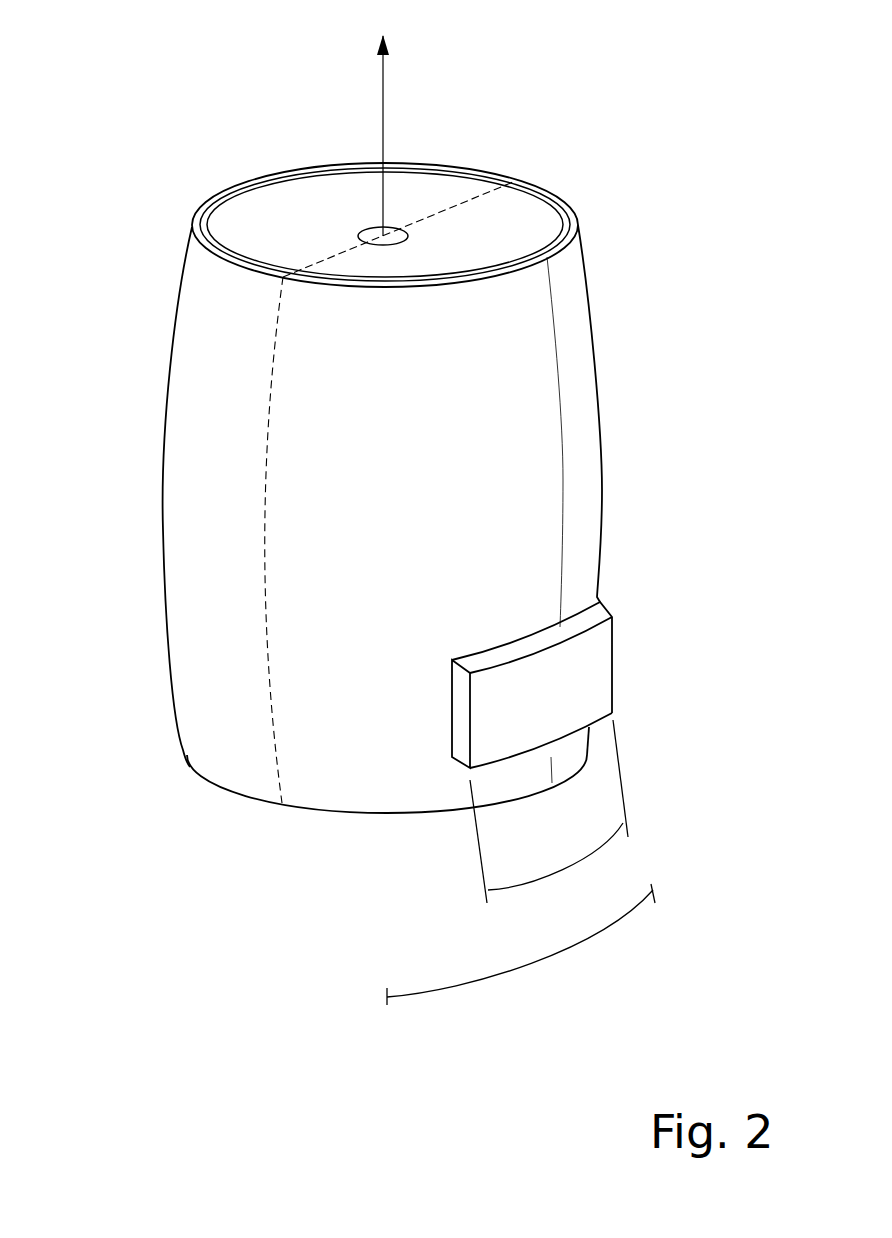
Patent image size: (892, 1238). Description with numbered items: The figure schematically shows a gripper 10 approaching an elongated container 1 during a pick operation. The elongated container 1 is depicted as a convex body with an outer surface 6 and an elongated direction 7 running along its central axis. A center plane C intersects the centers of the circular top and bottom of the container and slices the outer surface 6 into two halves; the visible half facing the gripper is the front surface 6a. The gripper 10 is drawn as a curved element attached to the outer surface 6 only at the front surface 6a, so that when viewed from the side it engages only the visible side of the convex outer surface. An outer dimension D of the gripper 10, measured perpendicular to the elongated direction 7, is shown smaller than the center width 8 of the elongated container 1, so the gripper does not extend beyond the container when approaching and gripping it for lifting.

The elongated container 1 is at (408, 540).
The outer surface 6 is at (426, 533).
The front surface 6a is at (370, 768).
The elongated direction 7 is at (382, 106).
The center width 8 is at (532, 963).
The gripper 10 is at (613, 605).
The center plane C is at (267, 645).
The outer dimension D is at (590, 850).